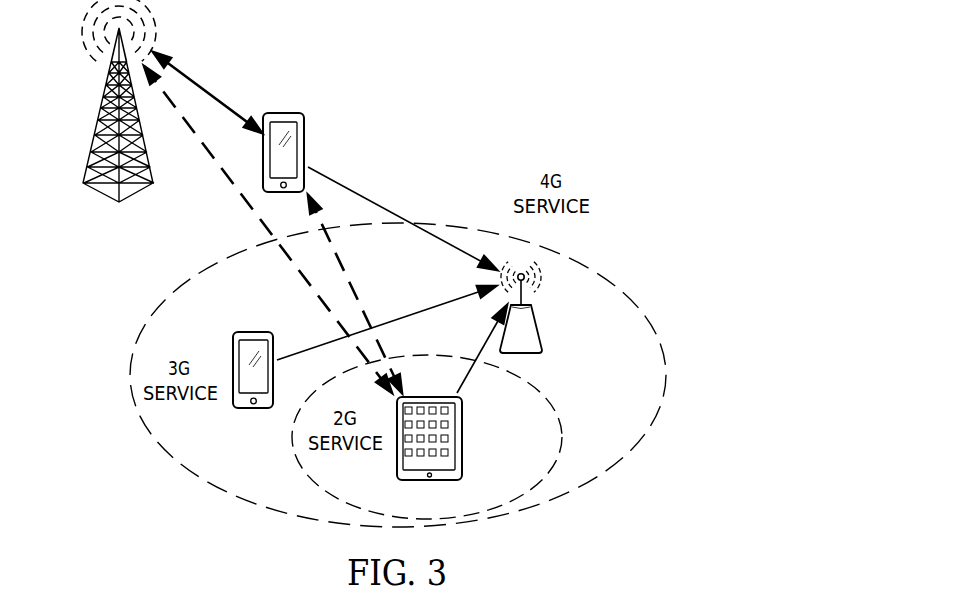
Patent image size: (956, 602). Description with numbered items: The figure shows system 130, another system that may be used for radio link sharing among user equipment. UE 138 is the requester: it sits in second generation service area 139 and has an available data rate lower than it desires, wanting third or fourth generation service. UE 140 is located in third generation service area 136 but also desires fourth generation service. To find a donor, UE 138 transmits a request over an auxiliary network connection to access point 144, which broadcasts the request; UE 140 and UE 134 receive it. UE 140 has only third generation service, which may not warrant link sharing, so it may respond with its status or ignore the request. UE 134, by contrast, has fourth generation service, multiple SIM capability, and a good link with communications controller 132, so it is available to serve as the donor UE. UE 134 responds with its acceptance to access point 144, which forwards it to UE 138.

The system 130 is at (562, 72).
The communications controller 132 is at (98, 115).
The UE 134 is at (304, 152).
The 3G service area 136 is at (672, 402).
The UE 138 is at (462, 437).
The 2G service area 139 is at (562, 425).
The UE 140 is at (250, 410).
The access point 144 is at (536, 330).